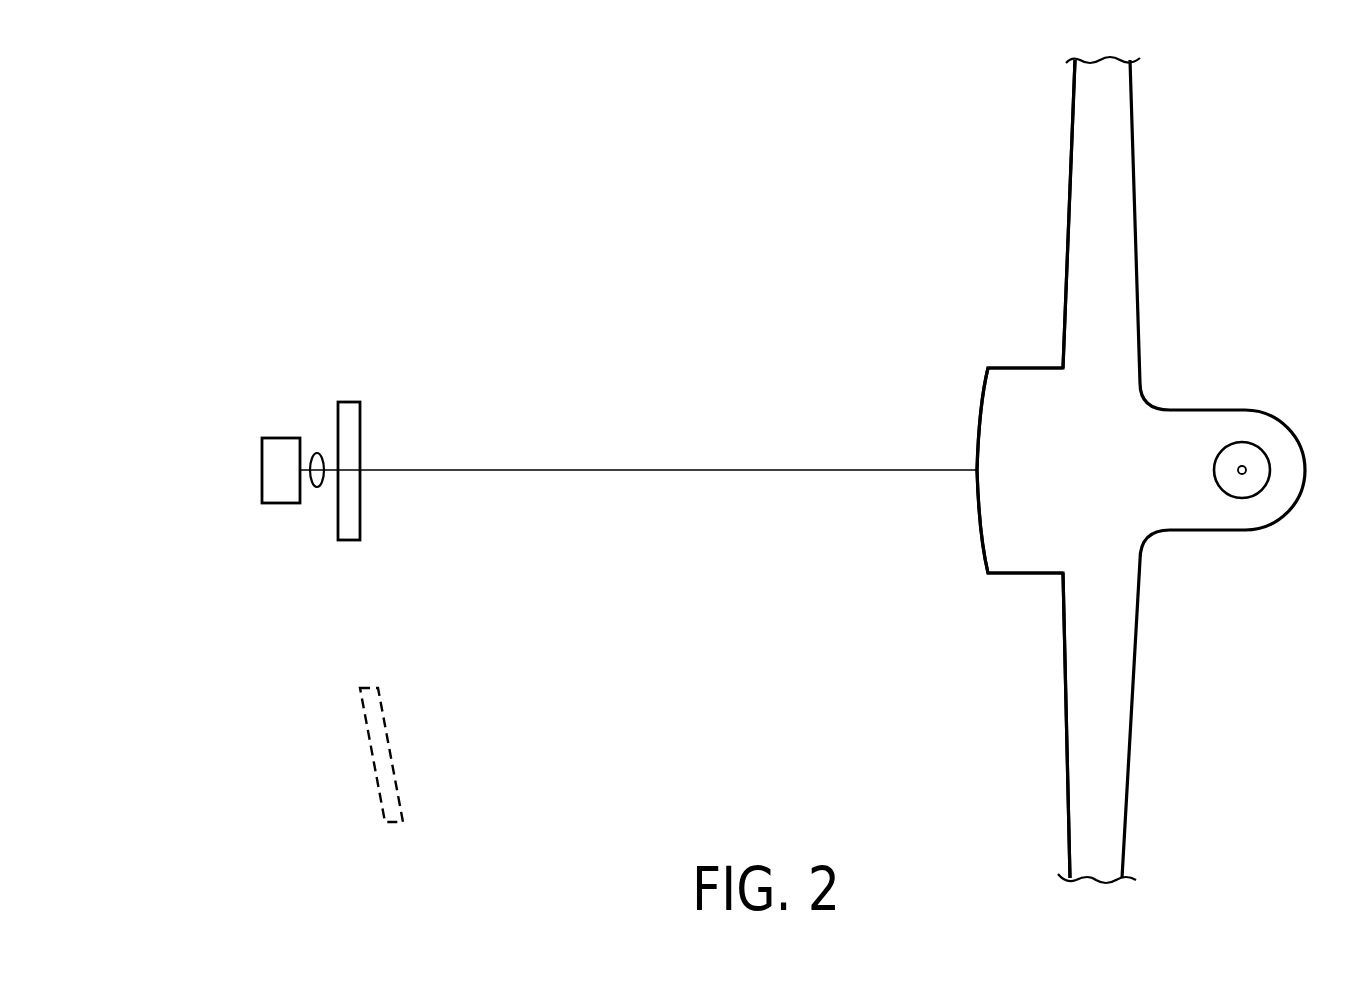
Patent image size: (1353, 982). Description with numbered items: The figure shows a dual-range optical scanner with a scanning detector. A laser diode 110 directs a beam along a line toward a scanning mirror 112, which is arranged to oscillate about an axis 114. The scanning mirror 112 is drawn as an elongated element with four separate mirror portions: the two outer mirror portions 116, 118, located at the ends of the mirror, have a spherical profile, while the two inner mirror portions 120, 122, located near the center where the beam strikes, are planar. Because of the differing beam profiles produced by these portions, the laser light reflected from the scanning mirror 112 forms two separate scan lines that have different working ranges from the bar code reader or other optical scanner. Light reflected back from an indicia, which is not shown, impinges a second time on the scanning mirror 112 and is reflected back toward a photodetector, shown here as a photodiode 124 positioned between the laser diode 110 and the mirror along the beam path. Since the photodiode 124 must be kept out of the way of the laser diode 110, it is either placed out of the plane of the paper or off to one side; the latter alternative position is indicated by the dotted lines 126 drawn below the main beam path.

The laser diode 110 is at (280, 438).
The scanning mirror 112 is at (1251, 222).
The axis 114 is at (1242, 478).
The outer mirror portion 116 is at (1067, 268).
The outer mirror portion 118 is at (1066, 752).
The inner mirror portion 120 is at (984, 395).
The inner mirror portion 122 is at (982, 547).
The photodiode 124 is at (360, 418).
The dotted lines 126 is at (372, 757).